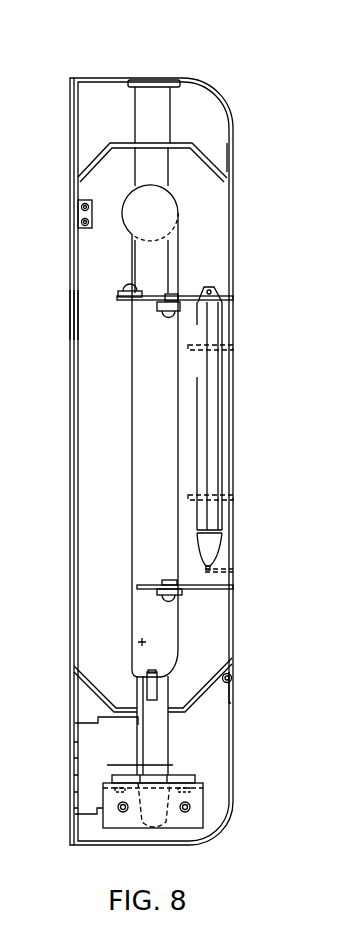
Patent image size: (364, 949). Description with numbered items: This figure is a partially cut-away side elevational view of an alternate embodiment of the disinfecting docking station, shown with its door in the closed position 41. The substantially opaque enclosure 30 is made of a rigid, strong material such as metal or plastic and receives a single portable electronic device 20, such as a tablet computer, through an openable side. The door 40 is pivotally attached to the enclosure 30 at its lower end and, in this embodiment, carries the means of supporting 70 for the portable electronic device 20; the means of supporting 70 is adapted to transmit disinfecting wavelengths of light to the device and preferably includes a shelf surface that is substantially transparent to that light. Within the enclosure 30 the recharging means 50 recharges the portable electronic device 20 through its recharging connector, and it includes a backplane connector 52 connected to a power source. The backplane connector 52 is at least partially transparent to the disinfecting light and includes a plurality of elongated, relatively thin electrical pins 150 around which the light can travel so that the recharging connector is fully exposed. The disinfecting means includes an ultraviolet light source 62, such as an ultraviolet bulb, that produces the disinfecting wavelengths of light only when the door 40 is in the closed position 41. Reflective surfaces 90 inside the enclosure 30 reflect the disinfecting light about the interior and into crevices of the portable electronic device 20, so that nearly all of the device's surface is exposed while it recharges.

The portable electronic device 20 is at (175, 255).
The enclosure 30 is at (183, 78).
The door 40 is at (233, 430).
The closed position 41 is at (296, 189).
The recharging means 50 is at (88, 720).
The backplane connector 52 is at (183, 708).
The ultraviolet light source 62 is at (153, 178).
The means of supporting 70 is at (188, 297).
The reflective surface 90 is at (79, 330).
The electrical pins 150 is at (157, 692).